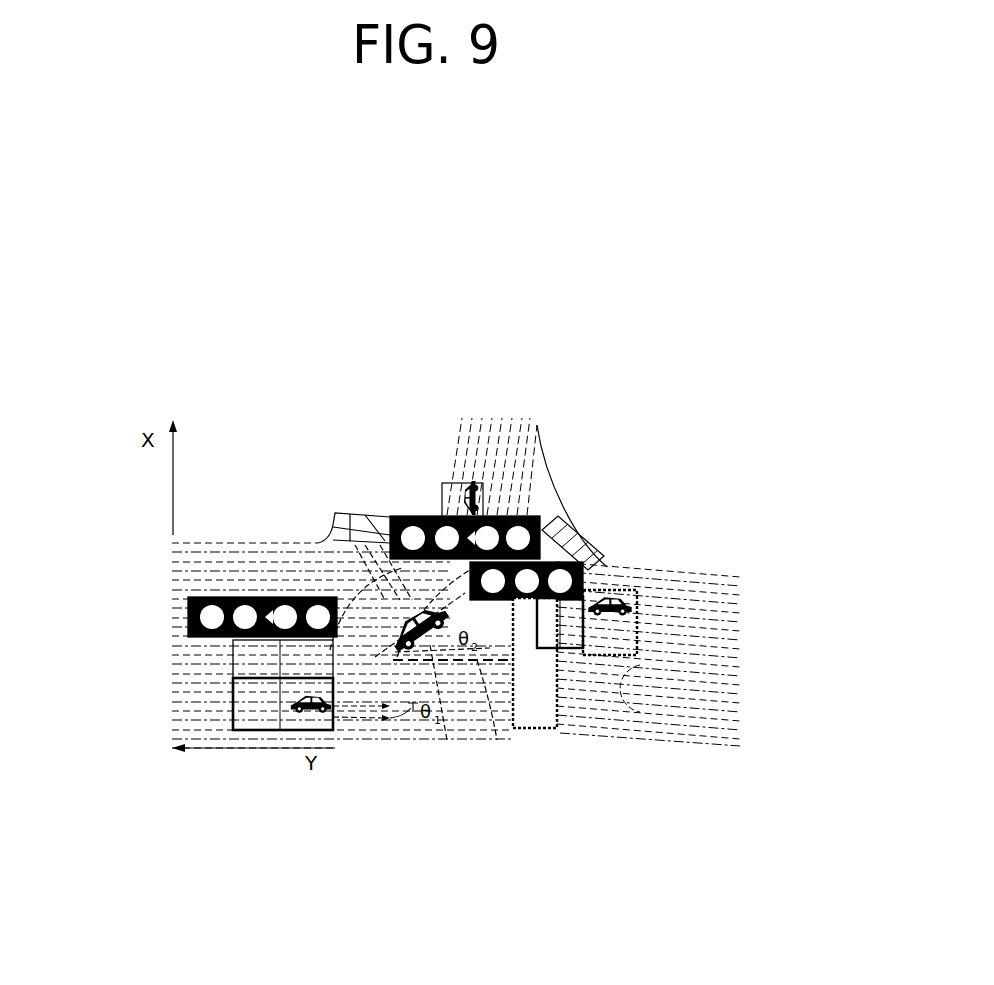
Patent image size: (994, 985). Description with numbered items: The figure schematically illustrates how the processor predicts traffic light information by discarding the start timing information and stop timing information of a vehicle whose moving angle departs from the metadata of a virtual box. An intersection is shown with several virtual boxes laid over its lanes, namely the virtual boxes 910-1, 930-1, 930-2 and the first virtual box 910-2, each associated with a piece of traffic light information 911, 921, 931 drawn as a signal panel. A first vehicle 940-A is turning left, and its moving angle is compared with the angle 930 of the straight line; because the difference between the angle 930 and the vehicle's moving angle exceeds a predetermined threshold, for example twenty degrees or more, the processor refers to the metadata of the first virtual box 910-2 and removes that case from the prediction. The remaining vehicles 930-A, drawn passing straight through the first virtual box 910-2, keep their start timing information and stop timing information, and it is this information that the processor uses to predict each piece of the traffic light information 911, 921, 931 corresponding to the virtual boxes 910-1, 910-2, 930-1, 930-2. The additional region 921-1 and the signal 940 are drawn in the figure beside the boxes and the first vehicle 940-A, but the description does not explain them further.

The traffic light information 911 is at (287, 598).
The virtual box 910-1 is at (233, 650).
The first virtual box 910-2 is at (233, 722).
The remaining vehicles 930-A is at (286, 703).
The angle of the straight line 930 is at (397, 713).
The virtual box 930-1 is at (480, 468).
The virtual box 930-2 is at (452, 460).
The traffic light information 931 is at (522, 505).
The traffic light information 921 is at (622, 583).
The sub region 921-1 is at (640, 627).
The third traffic light 940 is at (498, 747).
The first vehicle 940-A is at (447, 740).